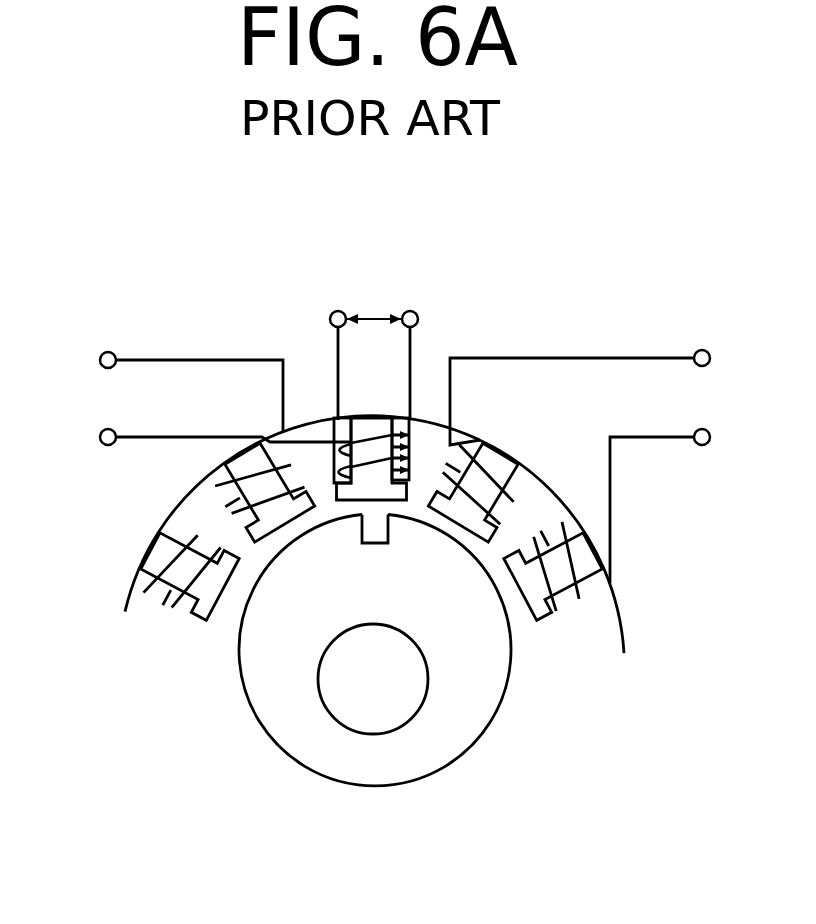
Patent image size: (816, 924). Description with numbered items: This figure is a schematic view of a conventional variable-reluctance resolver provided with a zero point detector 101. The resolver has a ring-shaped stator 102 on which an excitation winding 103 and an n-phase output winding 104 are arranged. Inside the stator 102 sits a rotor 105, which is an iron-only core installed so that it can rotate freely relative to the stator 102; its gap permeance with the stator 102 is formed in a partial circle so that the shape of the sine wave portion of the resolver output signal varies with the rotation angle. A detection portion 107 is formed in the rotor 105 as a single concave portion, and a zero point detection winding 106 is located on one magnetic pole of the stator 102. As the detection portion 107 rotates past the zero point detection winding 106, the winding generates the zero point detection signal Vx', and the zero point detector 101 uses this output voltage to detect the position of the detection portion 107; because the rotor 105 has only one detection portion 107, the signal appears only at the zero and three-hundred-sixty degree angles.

The zero point detector 101 is at (383, 483).
The ring-shaped stator 102 is at (628, 633).
The excitation winding 103 is at (243, 361).
The n-phase output winding 104 is at (565, 358).
The rotor 105 is at (492, 718).
The zero point detection winding 106 is at (413, 337).
The detection portion 107 is at (377, 528).